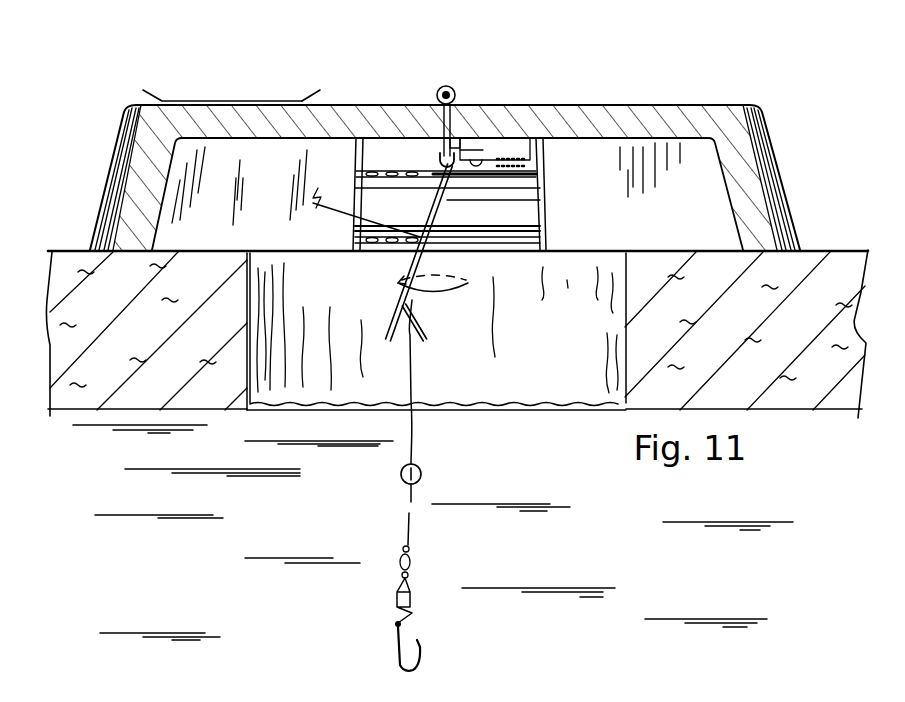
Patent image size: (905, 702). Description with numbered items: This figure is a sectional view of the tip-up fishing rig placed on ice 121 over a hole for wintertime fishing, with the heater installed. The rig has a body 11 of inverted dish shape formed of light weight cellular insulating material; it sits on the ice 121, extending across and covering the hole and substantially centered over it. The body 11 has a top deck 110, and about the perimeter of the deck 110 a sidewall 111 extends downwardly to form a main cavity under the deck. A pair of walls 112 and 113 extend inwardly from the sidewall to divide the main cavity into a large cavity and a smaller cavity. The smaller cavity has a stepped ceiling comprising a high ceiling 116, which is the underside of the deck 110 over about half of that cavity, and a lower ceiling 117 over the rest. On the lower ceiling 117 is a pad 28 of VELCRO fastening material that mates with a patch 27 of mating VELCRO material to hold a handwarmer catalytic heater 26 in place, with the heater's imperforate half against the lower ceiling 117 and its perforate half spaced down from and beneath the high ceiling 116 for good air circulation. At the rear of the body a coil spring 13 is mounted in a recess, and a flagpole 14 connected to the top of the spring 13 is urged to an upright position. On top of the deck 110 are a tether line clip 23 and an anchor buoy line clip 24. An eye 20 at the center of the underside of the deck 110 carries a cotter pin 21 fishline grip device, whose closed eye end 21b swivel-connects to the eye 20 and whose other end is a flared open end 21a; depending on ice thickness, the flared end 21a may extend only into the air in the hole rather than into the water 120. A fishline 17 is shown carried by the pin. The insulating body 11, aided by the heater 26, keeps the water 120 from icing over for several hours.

The body 11 is at (725, 86).
The coil spring 13 is at (446, 86).
The flagpole 14 is at (456, 92).
The fishing line 17 is at (325, 205).
The eye 20 is at (440, 143).
The cotter pin 21 is at (407, 274).
The flared open end 21a is at (408, 333).
The closed eye end 21b is at (436, 158).
The tether line clip 23 is at (163, 98).
The anchor buoy line clip 24 is at (308, 97).
The handwarmer catalytic heater 26 is at (508, 214).
The patch of mating VELCRO material 27 is at (536, 166).
The pad of VELCRO fastening material 28 is at (536, 162).
The top deck 110 is at (600, 103).
The sidewall 111 is at (760, 150).
The wall 112 is at (265, 214).
The wall 113 is at (714, 188).
The high ceiling 116 is at (648, 143).
The lower ceiling 117 is at (483, 158).
The water 120 is at (537, 400).
The ice 121 is at (640, 322).